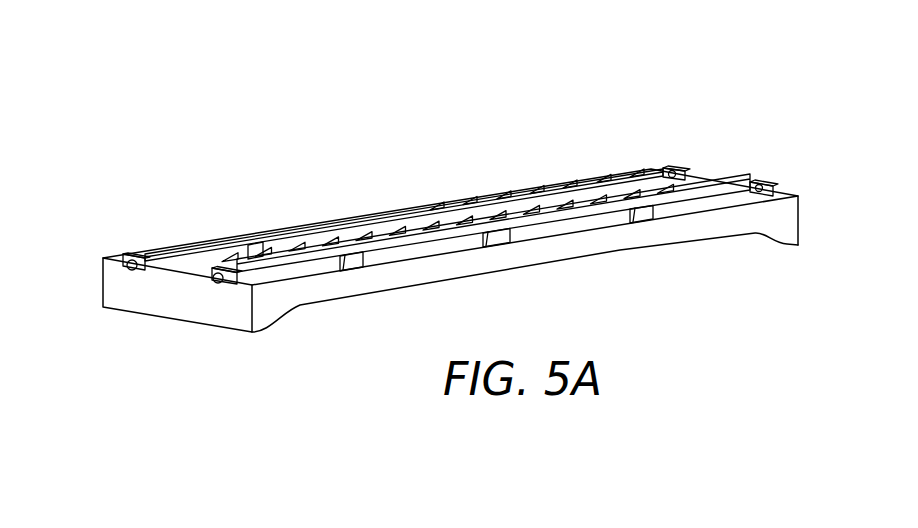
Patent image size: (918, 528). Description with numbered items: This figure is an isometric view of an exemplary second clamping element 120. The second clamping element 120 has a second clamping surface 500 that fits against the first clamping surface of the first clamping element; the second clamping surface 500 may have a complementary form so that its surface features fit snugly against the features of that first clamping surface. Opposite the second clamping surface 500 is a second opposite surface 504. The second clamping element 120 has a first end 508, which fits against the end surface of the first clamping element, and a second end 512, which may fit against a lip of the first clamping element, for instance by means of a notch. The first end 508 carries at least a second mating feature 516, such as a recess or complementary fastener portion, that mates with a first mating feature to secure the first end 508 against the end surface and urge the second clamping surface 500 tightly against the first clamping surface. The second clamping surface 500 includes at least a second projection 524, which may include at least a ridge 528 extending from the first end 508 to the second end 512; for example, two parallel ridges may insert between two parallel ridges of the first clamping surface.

The second clamping element 120 is at (205, 108).
The second clamping surface 500 is at (541, 194).
The second opposite surface 504 is at (717, 235).
The first end 508 is at (217, 283).
The second end 512 is at (760, 188).
The second mating feature 516 is at (242, 312).
The second projection 524 is at (223, 242).
The ridge 528 is at (307, 222).